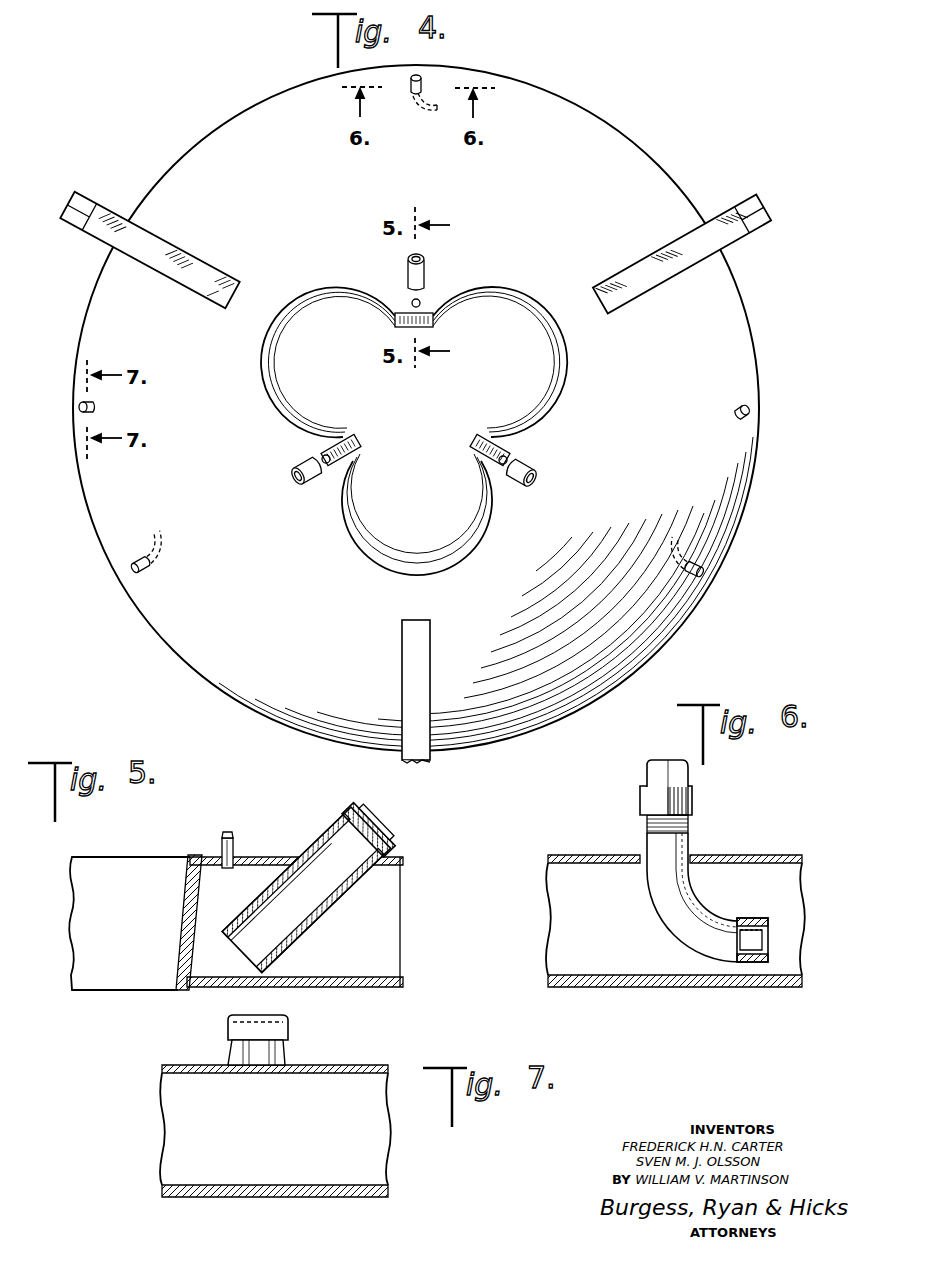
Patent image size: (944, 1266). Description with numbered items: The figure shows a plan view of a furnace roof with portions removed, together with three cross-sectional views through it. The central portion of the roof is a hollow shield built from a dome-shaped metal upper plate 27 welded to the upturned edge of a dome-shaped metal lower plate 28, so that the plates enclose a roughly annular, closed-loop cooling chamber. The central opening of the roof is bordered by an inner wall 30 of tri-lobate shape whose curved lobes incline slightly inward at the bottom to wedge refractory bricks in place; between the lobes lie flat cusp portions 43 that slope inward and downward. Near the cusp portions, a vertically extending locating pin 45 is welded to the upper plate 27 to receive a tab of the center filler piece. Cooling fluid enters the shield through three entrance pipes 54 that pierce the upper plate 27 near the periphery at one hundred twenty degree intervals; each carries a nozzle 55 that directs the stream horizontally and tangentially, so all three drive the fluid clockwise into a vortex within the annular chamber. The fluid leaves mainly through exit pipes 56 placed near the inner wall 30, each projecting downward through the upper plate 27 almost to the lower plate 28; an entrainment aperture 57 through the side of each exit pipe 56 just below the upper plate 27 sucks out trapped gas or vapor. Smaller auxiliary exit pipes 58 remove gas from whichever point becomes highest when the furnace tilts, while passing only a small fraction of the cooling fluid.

In FIG. 5, the upper plate 27 is at (262, 857).
In FIG. 6, the upper plate 27 is at (596, 857).
In FIG. 7, the upper plate 27 is at (360, 1048).
In FIG. 5, the lower plate 28 is at (332, 977).
In FIG. 6, the lower plate 28 is at (620, 988).
In FIG. 7, the lower plate 28 is at (280, 1197).
In FIG. 4, the inner wall 30 is at (527, 298).
In FIG. 4, the cusp portions 43 is at (397, 326).
In FIG. 5, the cusp portions 43 is at (188, 875).
In FIG. 5, the locating pin 45 is at (220, 845).
In FIG. 4, the entrance pipes 54 is at (422, 80).
In FIG. 6, the entrance pipes 54 is at (680, 840).
In FIG. 6, the nozzle 55 is at (770, 937).
In FIG. 4, the exit pipes 56 is at (422, 278).
In FIG. 5, the exit pipes 56 is at (315, 848).
In FIG. 5, the entrainment aperture 57 is at (272, 876).
In FIG. 4, the auxiliary exit pipes 58 is at (98, 407).
In FIG. 7, the auxiliary exit pipes 58 is at (256, 1050).